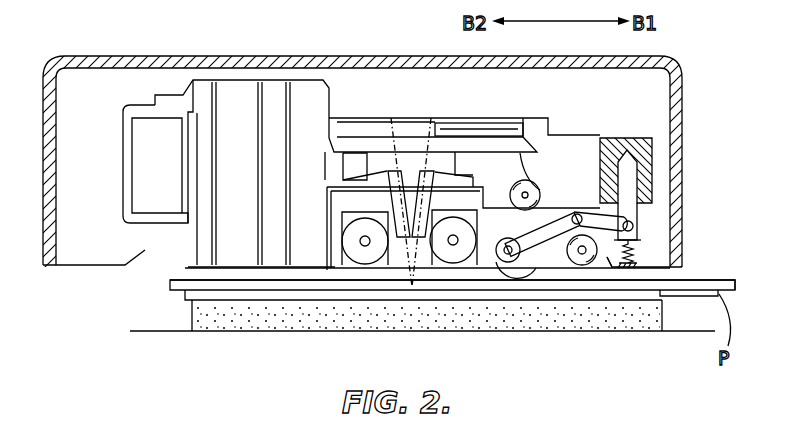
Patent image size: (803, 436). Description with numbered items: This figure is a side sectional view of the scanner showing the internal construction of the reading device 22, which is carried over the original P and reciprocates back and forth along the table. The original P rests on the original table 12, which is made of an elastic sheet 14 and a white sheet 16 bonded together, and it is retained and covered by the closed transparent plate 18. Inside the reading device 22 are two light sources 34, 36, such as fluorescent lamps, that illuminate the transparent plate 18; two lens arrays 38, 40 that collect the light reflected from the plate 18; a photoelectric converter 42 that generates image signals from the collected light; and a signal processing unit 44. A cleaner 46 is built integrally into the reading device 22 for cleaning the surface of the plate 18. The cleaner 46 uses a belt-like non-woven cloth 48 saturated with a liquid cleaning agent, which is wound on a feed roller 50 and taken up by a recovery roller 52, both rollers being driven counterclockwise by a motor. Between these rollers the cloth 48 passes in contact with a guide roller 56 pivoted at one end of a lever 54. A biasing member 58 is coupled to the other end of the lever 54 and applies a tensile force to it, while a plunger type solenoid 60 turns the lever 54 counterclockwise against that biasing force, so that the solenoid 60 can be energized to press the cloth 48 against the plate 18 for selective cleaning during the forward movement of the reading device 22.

The original table 12 is at (166, 292).
The elastic sheet 14 is at (646, 318).
The white sheet 16 is at (663, 296).
The transparent plate 18 is at (715, 283).
The reading device 22 is at (343, 96).
The light source 34 is at (350, 263).
The light source 36 is at (462, 270).
The lens array 38 is at (395, 170).
The lens array 40 is at (423, 170).
The photoelectric converter 42 is at (497, 126).
The signal processing unit 44 is at (240, 74).
The cleaner 46 is at (549, 250).
The non-woven cloth 48 is at (578, 263).
The feed roller 50 is at (528, 187).
The recovery roller 52 is at (609, 266).
The lever 54 is at (573, 213).
The guide roller 56 is at (496, 268).
The biasing member 58 is at (637, 250).
The plunger type solenoid 60 is at (622, 147).